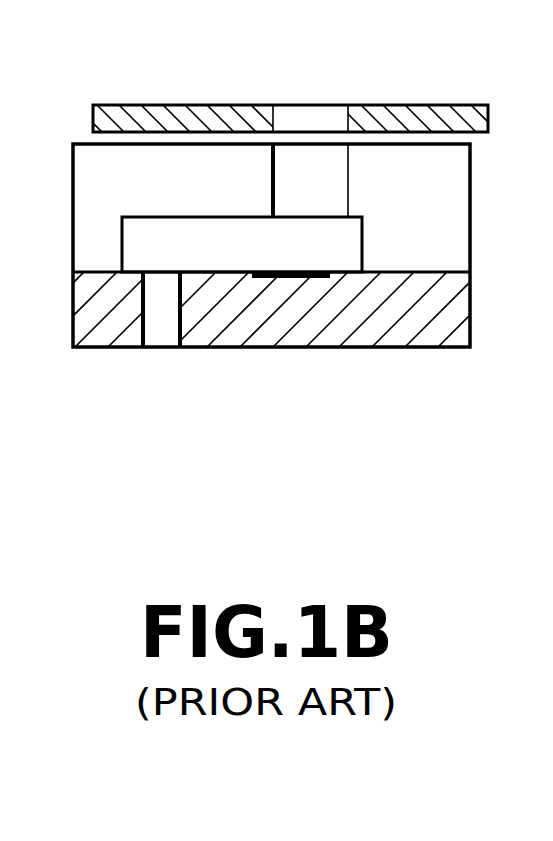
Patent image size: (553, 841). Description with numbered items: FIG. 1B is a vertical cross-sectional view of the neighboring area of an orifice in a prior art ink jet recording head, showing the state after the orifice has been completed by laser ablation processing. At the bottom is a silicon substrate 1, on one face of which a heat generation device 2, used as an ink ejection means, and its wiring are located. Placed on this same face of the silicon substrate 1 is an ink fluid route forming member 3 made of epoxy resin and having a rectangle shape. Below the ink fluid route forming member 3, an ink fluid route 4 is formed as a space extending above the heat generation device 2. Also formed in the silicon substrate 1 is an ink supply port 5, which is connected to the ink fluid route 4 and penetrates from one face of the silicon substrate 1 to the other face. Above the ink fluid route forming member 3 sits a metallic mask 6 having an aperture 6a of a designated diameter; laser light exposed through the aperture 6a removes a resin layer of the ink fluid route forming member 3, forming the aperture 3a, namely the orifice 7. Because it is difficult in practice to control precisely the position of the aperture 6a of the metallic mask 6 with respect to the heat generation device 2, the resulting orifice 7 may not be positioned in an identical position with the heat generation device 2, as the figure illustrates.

The silicon substrate 1 is at (427, 332).
The heat generation device 2 is at (274, 281).
The ink fluid route forming member 3 is at (462, 197).
The aperture 3a is at (273, 190).
The ink fluid route 4 is at (352, 243).
The ink supply port 5 is at (167, 332).
The metallic mask 6 is at (427, 110).
The aperture 6a is at (342, 120).
The orifice 7 is at (290, 142).